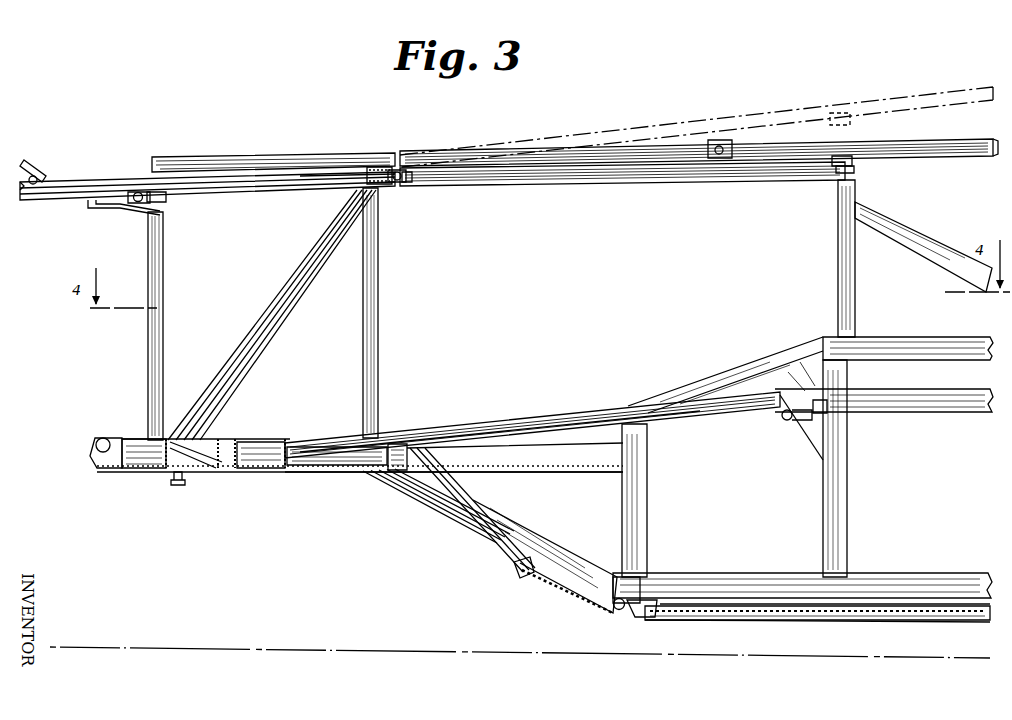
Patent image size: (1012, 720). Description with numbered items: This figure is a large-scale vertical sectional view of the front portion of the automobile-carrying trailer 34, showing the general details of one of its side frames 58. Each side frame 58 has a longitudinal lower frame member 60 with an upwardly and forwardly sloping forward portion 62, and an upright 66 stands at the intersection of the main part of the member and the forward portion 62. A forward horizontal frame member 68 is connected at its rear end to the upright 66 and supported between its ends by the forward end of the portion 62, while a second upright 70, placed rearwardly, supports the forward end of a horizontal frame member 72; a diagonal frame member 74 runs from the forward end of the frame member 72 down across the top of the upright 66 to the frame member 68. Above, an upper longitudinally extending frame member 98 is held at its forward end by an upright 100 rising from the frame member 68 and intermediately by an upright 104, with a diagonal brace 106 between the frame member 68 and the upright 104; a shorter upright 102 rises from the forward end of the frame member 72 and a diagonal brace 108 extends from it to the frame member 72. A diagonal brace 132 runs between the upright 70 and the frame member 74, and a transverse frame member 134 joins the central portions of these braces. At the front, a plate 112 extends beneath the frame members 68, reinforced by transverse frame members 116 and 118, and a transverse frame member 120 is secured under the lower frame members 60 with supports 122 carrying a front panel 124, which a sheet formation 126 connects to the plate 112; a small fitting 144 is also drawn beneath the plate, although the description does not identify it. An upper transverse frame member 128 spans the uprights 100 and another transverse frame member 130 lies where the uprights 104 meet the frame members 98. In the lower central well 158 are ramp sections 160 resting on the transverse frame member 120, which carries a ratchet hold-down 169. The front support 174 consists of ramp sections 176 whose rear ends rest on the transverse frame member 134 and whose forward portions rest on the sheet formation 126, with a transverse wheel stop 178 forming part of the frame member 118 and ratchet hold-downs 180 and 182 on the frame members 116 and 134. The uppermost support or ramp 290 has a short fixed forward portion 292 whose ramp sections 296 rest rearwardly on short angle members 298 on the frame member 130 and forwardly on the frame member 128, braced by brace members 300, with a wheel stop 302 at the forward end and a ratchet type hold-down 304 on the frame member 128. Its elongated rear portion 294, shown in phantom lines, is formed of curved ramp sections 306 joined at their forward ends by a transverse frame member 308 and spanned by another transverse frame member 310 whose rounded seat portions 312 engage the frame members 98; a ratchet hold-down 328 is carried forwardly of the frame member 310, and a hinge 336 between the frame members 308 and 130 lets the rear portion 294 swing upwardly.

The trailer 34 is at (836, 624).
The side frame 58 is at (445, 518).
The longitudinal lower frame member 60 is at (898, 560).
The forward portion 62 is at (575, 548).
The upright 66 is at (648, 483).
The forward horizontal frame member 68 is at (530, 460).
The second upright 70 is at (848, 476).
The horizontal frame member 72 is at (922, 326).
The diagonal frame member 74 is at (750, 374).
The upper longitudinally extending frame member 98 is at (564, 180).
The upright 100 is at (147, 250).
The shorter upright 102 is at (839, 256).
The upright 104 is at (379, 297).
The diagonal brace 106 is at (278, 306).
The diagonal brace 108 is at (926, 210).
The plate 112 is at (222, 472).
The transverse frame member 116 is at (128, 437).
The transverse frame member 118 is at (204, 446).
The transverse frame member 120 is at (637, 617).
The support 122 is at (562, 592).
The front panel 124 is at (518, 574).
The sheet formation 126 is at (440, 461).
The upper transverse frame member 128 is at (166, 198).
The transverse frame member 130 is at (388, 188).
The diagonal brace 132 is at (805, 438).
The transverse frame member 134 is at (828, 410).
The bolt 144 is at (172, 480).
The lower central well 158 is at (800, 605).
The ramp section 160 is at (918, 620).
The ratchet hold-down 169 is at (650, 590).
The front support 174 is at (575, 405).
The ramp section 176 is at (480, 414).
The transverse wheel stop 178 is at (255, 446).
The ratchet hold-down 180 is at (100, 440).
The ratchet hold-down 182 is at (782, 418).
The uppermost support or ramp 290 is at (960, 139).
The fixed forward portion 292 is at (252, 160).
The rear portion 294 is at (898, 90).
The ramp section 296 is at (252, 184).
The short angle member 298 is at (354, 183).
The brace member 300 is at (120, 210).
The wheel stop 302 is at (44, 172).
The ratchet type hold-down 304 is at (140, 193).
The ramp section 306 is at (966, 156).
The transverse frame member 308 is at (406, 180).
The transverse frame member 310 is at (838, 156).
The rounded seat portion 312 is at (838, 174).
The ratchet hold-down 328 is at (720, 140).
The hinge 336 is at (397, 171).